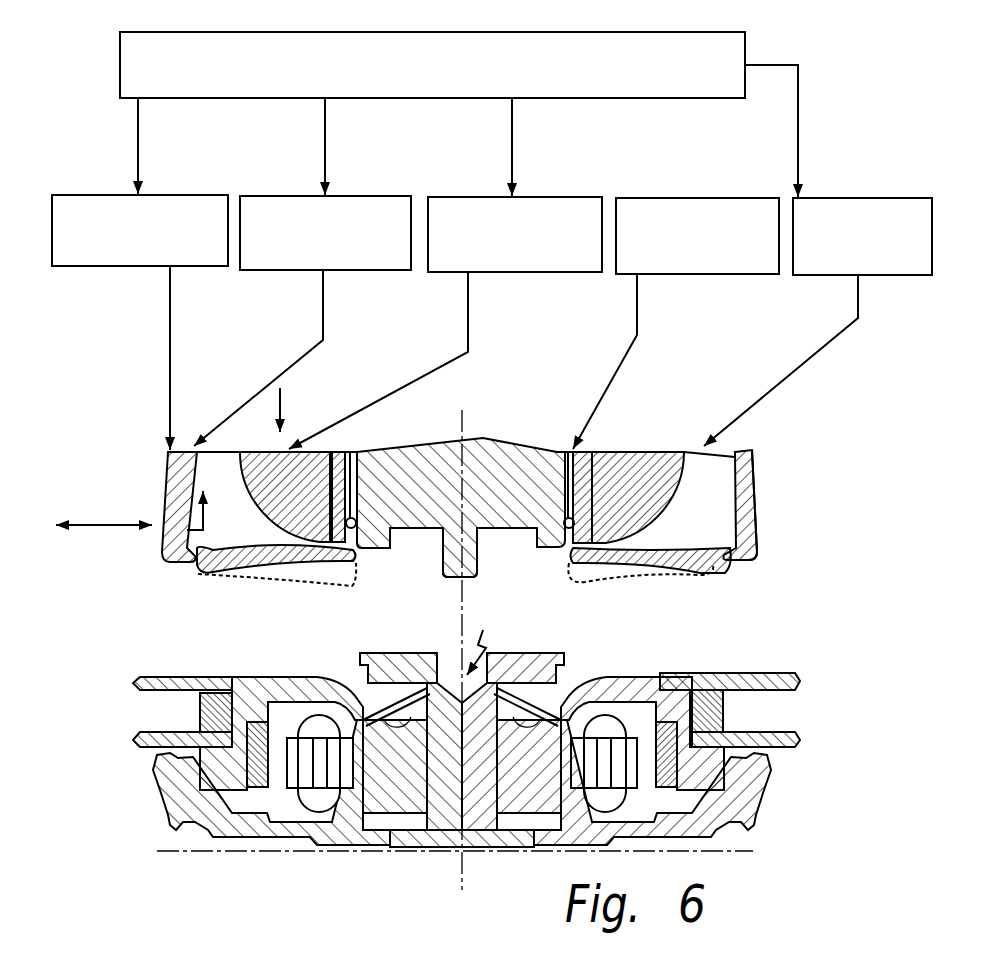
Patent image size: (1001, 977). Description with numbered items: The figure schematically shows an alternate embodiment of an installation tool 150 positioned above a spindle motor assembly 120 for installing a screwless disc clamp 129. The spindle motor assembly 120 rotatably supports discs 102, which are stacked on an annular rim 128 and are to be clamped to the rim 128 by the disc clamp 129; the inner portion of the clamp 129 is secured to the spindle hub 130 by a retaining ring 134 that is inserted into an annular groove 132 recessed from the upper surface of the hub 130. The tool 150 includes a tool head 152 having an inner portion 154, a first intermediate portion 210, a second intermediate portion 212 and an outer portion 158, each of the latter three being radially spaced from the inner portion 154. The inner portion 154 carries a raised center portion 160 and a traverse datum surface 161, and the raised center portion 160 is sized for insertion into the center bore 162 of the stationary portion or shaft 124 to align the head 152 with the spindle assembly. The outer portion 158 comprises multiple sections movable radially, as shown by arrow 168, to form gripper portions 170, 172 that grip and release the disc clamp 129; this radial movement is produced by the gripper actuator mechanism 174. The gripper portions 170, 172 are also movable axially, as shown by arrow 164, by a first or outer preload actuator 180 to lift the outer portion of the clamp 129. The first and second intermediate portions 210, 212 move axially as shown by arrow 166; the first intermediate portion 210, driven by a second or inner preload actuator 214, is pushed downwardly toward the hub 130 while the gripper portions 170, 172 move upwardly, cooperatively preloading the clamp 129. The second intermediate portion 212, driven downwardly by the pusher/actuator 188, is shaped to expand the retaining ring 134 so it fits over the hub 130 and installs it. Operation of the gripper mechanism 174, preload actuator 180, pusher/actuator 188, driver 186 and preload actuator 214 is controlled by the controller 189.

The controller 189 is at (750, 45).
The gripper actuator mechanism 174 is at (118, 194).
The outer preload actuator 180 is at (303, 195).
The inner preload actuator 214 is at (544, 196).
The pusher/actuator 188 is at (676, 197).
The driver 186 is at (857, 197).
The installation tool 150 is at (861, 376).
The gripper portion 170 is at (143, 414).
The arrow 164 is at (165, 497).
The arrow 168 is at (100, 527).
The arrow 166 is at (283, 415).
The second intermediate portion 212 is at (345, 467).
The inner portion 154 is at (527, 464).
The traverse datum surface 161 is at (375, 553).
The raised center portion 160 is at (483, 557).
The retaining ring 134 is at (569, 528).
The first intermediate portion 210 is at (647, 477).
The screwless disc clamp 129 is at (663, 547).
The tool head 152 is at (750, 444).
The gripper portion 172 is at (754, 480).
The outer portion 158 is at (758, 530).
The center bore 162 is at (488, 650).
The spindle motor assembly 120 is at (766, 648).
The stationary portion or shaft 124 is at (449, 650).
The spindle hub 130 is at (507, 652).
The annular groove 132 is at (570, 688).
The discs 102 is at (800, 684).
The annular rim 128 is at (718, 750).